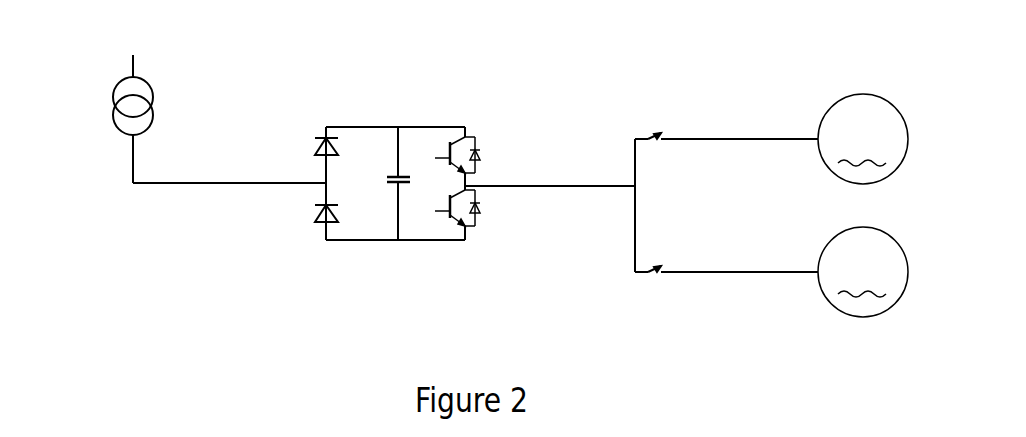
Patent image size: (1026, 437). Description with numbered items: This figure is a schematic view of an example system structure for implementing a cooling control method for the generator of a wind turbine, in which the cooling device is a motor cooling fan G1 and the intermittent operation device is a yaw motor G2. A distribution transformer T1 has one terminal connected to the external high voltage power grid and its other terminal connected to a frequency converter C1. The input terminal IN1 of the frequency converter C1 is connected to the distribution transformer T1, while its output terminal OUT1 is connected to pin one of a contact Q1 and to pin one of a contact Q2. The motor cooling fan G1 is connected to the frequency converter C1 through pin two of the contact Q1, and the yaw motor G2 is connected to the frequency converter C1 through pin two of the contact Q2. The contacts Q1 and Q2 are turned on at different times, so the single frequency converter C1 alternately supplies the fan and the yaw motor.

The distribution transformer T1 is at (169, 104).
The input terminal IN1 is at (288, 171).
The frequency converter C1 is at (397, 175).
The output terminal OUT1 is at (550, 205).
The contact Q1 is at (726, 139).
The contact Q2 is at (726, 274).
The motor cooling fan G1 is at (856, 156).
The yaw motor G2 is at (865, 289).